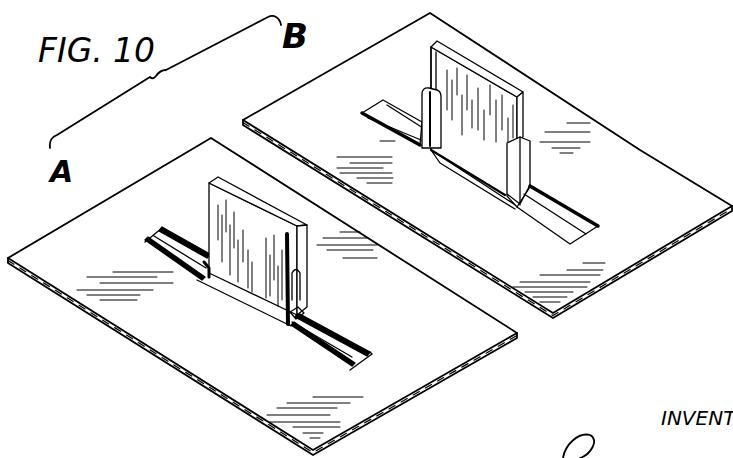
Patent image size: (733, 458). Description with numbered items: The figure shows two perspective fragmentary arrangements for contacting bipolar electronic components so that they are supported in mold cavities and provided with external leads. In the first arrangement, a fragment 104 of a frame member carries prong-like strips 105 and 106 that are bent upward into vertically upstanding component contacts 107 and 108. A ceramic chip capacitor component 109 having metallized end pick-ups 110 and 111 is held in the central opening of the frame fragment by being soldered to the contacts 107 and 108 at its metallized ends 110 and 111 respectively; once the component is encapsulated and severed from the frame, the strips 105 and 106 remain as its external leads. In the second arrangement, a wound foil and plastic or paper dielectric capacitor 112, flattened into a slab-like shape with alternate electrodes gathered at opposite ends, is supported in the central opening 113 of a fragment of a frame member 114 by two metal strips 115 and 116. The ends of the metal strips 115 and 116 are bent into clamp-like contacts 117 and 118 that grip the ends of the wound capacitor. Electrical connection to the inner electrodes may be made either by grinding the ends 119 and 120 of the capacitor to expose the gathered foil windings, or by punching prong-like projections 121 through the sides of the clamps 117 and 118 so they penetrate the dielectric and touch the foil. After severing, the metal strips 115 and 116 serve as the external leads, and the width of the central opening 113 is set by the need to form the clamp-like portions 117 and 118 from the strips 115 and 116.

The fragment of a frame member 104 is at (90, 298).
The prong-like strip 105 is at (148, 243).
The prong-like strip 106 is at (333, 340).
The vertically upstanding component contact 107 is at (207, 240).
The vertically upstanding component contact 108 is at (267, 316).
The ceramic chip capacitor component 109 is at (232, 183).
The metallized end pick-up 110 is at (210, 203).
The metallized end pick-up 111 is at (293, 250).
The wound foil and dielectric capacitor 112 is at (488, 75).
The central opening 113 is at (477, 183).
The fragment of a frame member 114 is at (683, 180).
The metal strip 115 is at (390, 115).
The metal strip 116 is at (562, 223).
The clamp-like contact 117 is at (425, 97).
The clamp-like contact 118 is at (522, 162).
The end of the capacitor 119 is at (428, 63).
The end of the capacitor 120 is at (522, 109).
The prong-like projection 121 is at (508, 152).